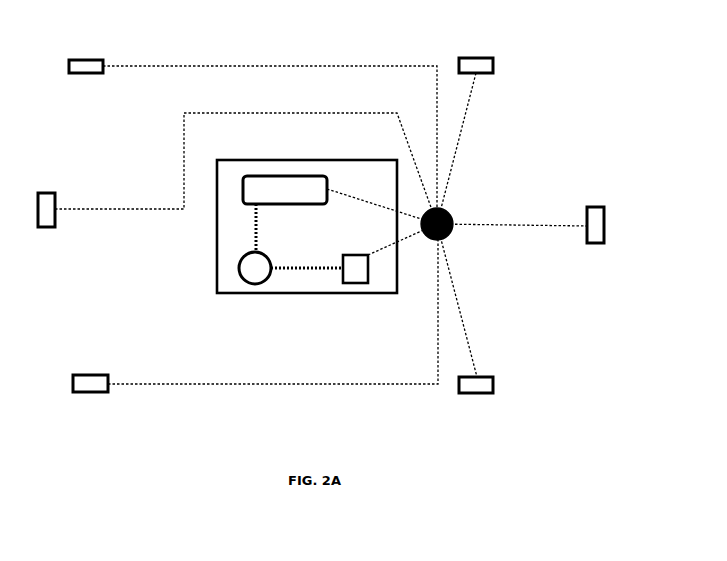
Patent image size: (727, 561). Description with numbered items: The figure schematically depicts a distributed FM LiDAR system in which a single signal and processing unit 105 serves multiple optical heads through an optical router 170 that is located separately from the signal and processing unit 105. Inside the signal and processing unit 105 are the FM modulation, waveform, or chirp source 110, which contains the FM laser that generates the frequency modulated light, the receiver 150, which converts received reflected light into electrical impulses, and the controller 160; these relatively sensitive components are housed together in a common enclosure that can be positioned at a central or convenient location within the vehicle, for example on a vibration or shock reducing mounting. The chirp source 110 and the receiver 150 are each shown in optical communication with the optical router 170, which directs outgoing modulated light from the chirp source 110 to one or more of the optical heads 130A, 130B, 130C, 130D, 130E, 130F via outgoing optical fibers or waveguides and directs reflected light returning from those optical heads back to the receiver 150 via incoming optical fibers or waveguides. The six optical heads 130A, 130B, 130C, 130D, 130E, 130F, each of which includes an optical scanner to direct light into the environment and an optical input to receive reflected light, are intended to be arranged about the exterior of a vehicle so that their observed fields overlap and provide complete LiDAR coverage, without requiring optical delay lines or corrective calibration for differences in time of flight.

The signal and processing unit 105 is at (190, 279).
The FM modulation, waveform, or chirp source 110 is at (243, 193).
The receiver 150 is at (357, 282).
The controller 160 is at (252, 287).
The optical router 170 is at (453, 213).
The optical head 130A is at (50, 192).
The optical head 130B is at (93, 58).
The optical head 130C is at (489, 56).
The optical head 130D is at (605, 207).
The optical head 130E is at (490, 375).
The optical head 130F is at (87, 373).